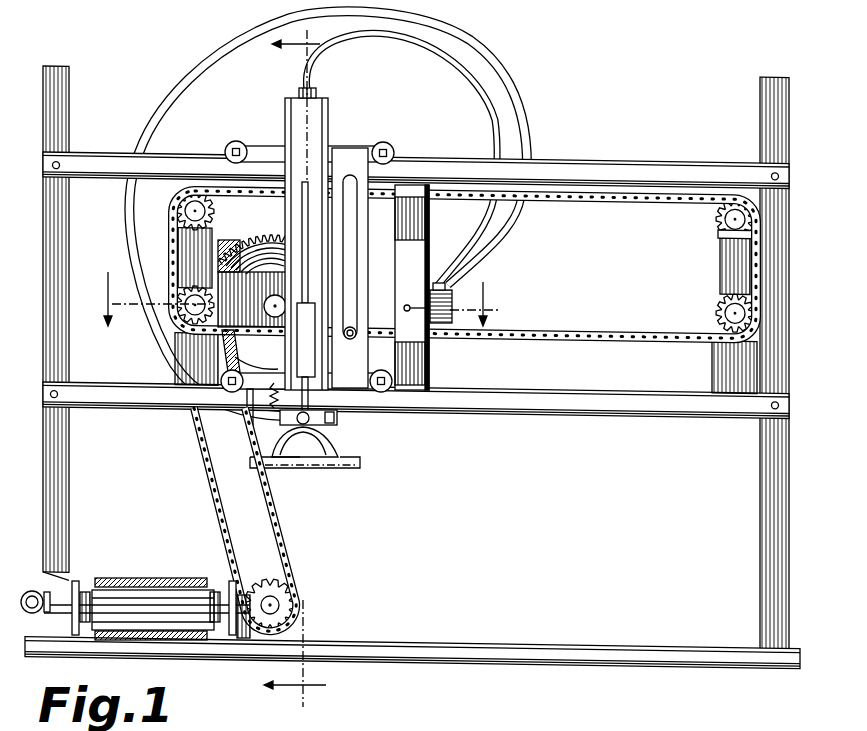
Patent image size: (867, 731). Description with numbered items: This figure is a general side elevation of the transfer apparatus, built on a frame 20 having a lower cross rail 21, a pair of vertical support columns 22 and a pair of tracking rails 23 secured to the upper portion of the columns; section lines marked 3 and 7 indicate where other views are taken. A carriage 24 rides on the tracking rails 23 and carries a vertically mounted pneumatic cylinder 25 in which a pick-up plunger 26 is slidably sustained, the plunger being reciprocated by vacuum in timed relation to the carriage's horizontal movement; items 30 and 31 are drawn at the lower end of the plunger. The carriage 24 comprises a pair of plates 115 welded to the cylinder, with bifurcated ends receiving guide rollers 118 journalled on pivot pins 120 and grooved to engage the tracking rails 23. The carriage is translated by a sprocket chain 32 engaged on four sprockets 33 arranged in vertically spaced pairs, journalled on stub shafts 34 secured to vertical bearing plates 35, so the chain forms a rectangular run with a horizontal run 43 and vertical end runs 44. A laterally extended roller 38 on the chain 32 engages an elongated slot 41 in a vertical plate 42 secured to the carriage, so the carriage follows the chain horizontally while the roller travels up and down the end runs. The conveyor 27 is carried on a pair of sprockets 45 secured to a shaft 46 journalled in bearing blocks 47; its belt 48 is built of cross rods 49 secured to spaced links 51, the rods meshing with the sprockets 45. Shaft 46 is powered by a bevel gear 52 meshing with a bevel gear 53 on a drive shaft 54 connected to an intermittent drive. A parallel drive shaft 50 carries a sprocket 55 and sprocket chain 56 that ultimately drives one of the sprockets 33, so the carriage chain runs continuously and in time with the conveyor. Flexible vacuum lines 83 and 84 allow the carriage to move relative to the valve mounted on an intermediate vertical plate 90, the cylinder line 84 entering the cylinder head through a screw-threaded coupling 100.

The frame 20 is at (412, 367).
The lower cross rail 21 is at (560, 637).
The vertical support columns 22 is at (72, 490).
The tracking rails 23 is at (620, 190).
The carriage 24 is at (374, 219).
The pneumatic cylinder 25 is at (329, 116).
The pick-up plunger 26 is at (338, 420).
The conveyor 27 is at (152, 578).
The base plate 30 is at (352, 468).
The nozzle 31 is at (297, 455).
The sprocket chain 32 is at (623, 325).
The sprockets 33 is at (214, 208).
The stub shafts 34 is at (719, 226).
The vertical bearing plates 35 is at (176, 355).
The laterally extended roller 38 is at (358, 325).
The elongated slot 41 is at (357, 243).
The vertical plate 42 is at (356, 380).
The horizontal run 43 is at (555, 195).
The vertical end runs 44 is at (177, 260).
The sprockets 45 is at (206, 590).
The shaft 46 is at (152, 615).
The bearing blocks 47 is at (243, 640).
The conveyor belt 48 is at (183, 578).
The cross rods 49 is at (112, 578).
The drive shaft 50 is at (282, 600).
The spaced links 51 is at (79, 582).
The bevel gear 52 is at (47, 616).
The bevel gear 53 is at (38, 612).
The drive shaft 54 is at (33, 592).
The sprocket 55 is at (290, 582).
The sprocket chain 56 is at (282, 526).
The vacuum line 83 is at (503, 62).
The cylinder vacuum line 84 is at (466, 80).
The intermediate vertical plate 90 is at (418, 366).
The coupling 100 is at (316, 94).
The carriage plates 115 is at (250, 148).
The guide rollers 118 is at (226, 147).
The pivot pins 120 is at (372, 148).
The section line 3- 3 is at (296, 299).
The section line 7- 7 is at (295, 373).